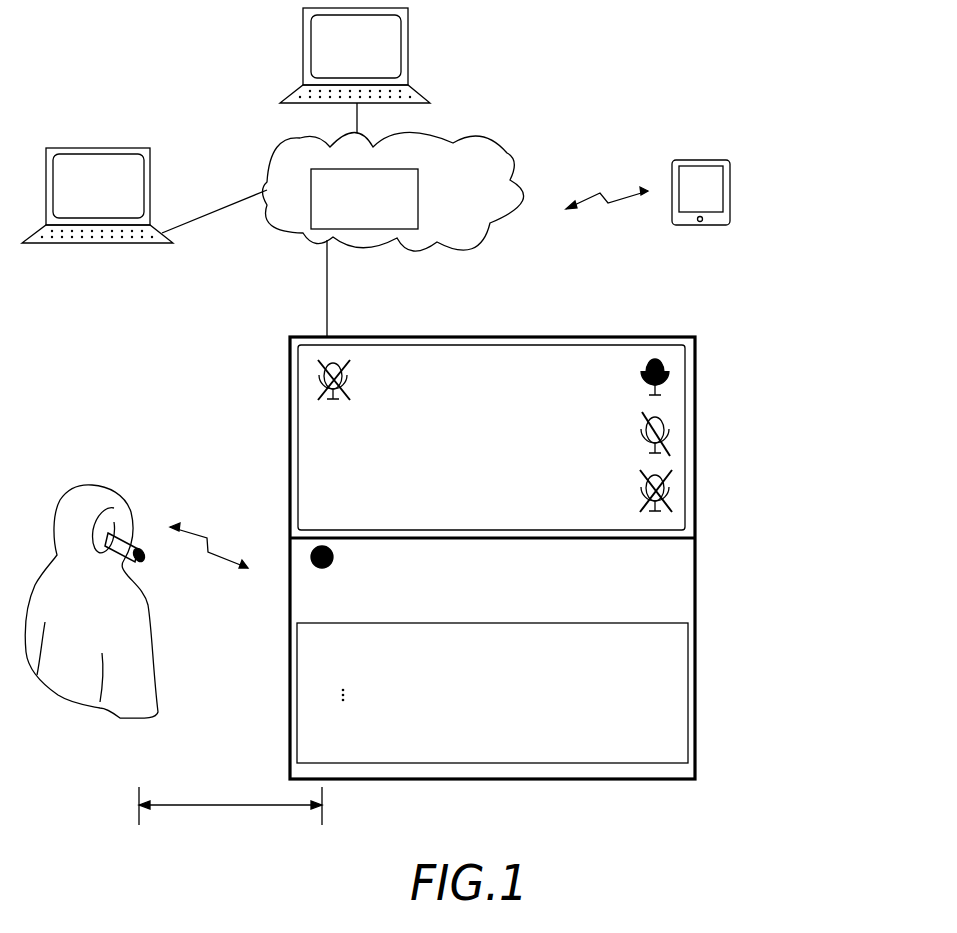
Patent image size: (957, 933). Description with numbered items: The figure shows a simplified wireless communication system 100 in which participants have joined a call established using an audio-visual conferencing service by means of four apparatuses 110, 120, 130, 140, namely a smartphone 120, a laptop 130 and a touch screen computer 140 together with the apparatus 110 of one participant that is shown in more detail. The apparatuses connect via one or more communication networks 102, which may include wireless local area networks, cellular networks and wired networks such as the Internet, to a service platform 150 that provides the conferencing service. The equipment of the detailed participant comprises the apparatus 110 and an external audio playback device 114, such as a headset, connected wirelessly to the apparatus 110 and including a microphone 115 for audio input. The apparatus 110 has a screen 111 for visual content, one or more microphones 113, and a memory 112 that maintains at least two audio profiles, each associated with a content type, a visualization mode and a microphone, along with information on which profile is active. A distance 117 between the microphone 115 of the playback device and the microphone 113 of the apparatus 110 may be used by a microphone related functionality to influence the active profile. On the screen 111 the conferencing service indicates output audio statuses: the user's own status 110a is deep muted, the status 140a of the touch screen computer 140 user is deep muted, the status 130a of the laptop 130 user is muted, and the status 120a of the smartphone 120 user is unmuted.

The system 100 is at (660, 47).
The communication networks 102 is at (497, 140).
The apparatus 110 is at (697, 645).
The status 110a is at (348, 398).
The screen 111 is at (428, 360).
The memory 112 is at (598, 623).
The microphone 113 is at (325, 570).
The audio playback device 114 is at (117, 493).
The microphone 115 is at (148, 565).
The distance 117 is at (155, 797).
The smartphone 120 is at (697, 229).
The status 120a is at (642, 380).
The laptop 130 is at (412, 50).
The status 130a is at (642, 439).
The touch screen computer 140 is at (103, 146).
The status 140a is at (642, 497).
The service platform 150 is at (422, 183).